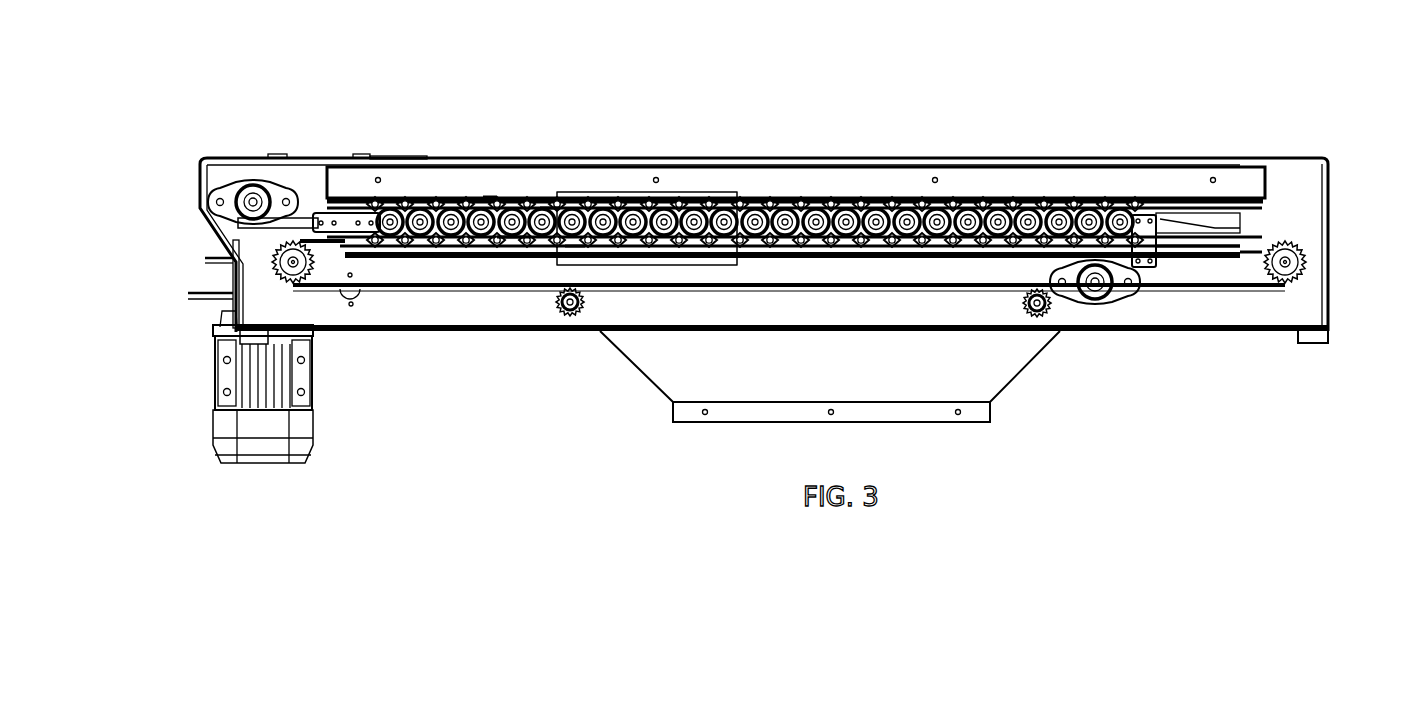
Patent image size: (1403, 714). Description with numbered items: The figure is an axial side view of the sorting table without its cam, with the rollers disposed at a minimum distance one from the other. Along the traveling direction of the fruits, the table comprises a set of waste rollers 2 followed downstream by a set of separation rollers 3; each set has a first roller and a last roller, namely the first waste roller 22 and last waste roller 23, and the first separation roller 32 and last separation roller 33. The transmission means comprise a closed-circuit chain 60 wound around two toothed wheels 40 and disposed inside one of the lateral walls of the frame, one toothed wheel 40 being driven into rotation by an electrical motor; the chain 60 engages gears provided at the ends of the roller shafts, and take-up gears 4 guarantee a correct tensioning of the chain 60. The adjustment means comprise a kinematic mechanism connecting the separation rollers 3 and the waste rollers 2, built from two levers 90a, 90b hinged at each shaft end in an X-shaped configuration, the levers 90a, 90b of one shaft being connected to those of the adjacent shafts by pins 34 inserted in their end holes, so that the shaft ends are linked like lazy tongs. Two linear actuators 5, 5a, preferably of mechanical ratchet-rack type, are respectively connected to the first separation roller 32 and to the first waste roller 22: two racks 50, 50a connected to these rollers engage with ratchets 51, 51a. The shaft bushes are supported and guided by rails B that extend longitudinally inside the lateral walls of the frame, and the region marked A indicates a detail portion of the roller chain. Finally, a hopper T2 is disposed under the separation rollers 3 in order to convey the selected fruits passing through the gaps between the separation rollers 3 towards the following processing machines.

The waste rollers 2 is at (428, 195).
The separation rollers 3 is at (921, 197).
The take-up gears 4 is at (573, 318).
The linear actuator 5 is at (1153, 272).
The linear actuator 5a is at (312, 203).
The first waste roller 22 is at (388, 206).
The last waste roller 23 is at (547, 196).
The first separation roller 32 is at (1122, 197).
The last separation roller 33 is at (572, 238).
The pins 34 is at (503, 196).
The toothed wheels 40 is at (1303, 234).
The rack 50 is at (1047, 262).
The rack 50a is at (297, 221).
The ratchet 51 is at (1103, 298).
The ratchet 51a is at (248, 183).
The closed-circuit chain 60 is at (450, 291).
The lever 90a is at (605, 196).
The lever 90b is at (484, 195).
The region A is at (647, 220).
The rails B is at (1242, 180).
The hopper T2 is at (925, 387).